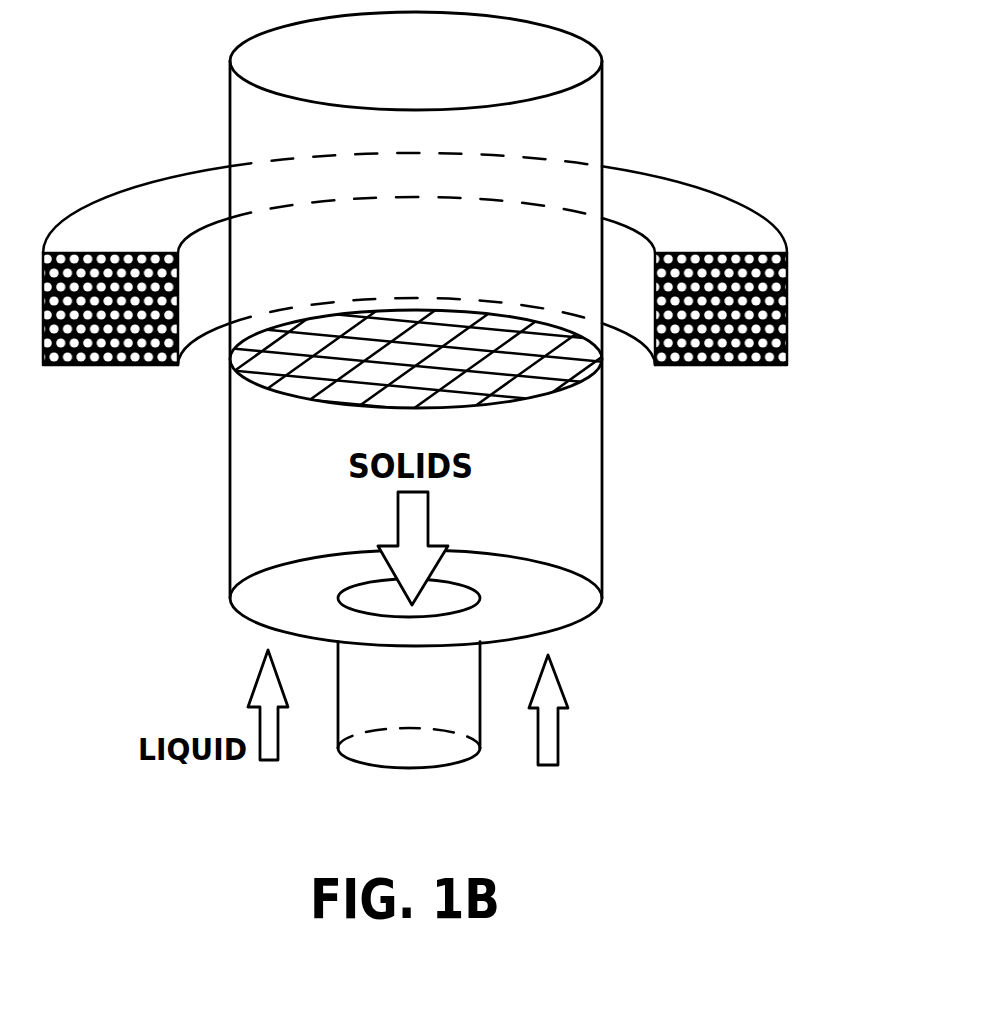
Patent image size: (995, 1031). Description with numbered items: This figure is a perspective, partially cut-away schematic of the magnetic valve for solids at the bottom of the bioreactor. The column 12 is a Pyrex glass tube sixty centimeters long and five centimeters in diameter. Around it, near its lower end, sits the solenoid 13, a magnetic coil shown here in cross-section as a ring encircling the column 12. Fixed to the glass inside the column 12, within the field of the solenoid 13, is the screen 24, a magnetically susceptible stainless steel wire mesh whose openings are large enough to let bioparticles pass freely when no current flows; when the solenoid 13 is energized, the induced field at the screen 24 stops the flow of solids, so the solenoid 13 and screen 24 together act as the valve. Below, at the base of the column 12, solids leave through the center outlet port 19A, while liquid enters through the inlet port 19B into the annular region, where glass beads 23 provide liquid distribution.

The column 12 is at (603, 128).
The solenoid 13 is at (787, 287).
The screen 24 is at (603, 355).
The glass beads 23 is at (243, 598).
The center outlet port 19A is at (423, 755).
The inlet port 19B is at (257, 675).